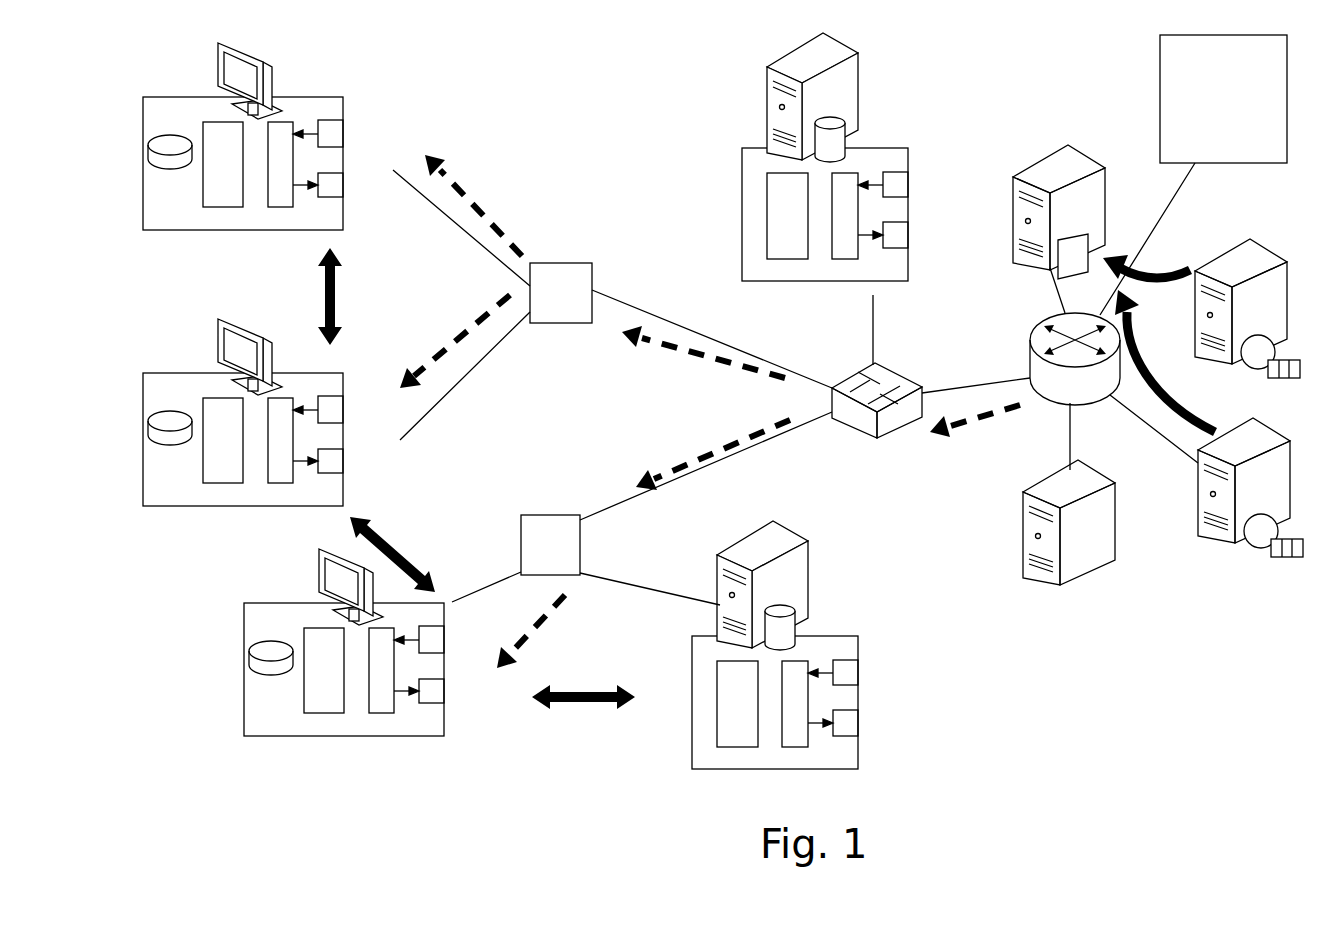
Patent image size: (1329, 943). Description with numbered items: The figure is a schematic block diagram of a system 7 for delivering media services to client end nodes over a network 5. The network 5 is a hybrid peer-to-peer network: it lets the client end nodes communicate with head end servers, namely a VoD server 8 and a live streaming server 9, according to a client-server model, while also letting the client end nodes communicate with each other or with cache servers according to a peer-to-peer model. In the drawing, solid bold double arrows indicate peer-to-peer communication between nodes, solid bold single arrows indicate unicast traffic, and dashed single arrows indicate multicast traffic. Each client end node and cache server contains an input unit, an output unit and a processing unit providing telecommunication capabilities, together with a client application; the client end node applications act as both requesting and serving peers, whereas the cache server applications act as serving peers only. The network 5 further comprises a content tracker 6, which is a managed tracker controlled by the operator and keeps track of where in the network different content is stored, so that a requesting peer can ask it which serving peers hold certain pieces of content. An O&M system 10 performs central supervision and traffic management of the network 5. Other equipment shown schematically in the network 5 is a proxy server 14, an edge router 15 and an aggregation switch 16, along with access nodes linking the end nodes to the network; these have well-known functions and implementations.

The network 5 is at (558, 140).
The content tracker 6 is at (1100, 470).
The system 7 is at (1205, 733).
The VoD server 8 is at (1265, 248).
The live streaming server 9 is at (1232, 428).
The O&M system 10 is at (1240, 163).
The proxy server 14 is at (1107, 165).
The edge router 15 is at (1040, 323).
The aggregation switch 16 is at (905, 370).